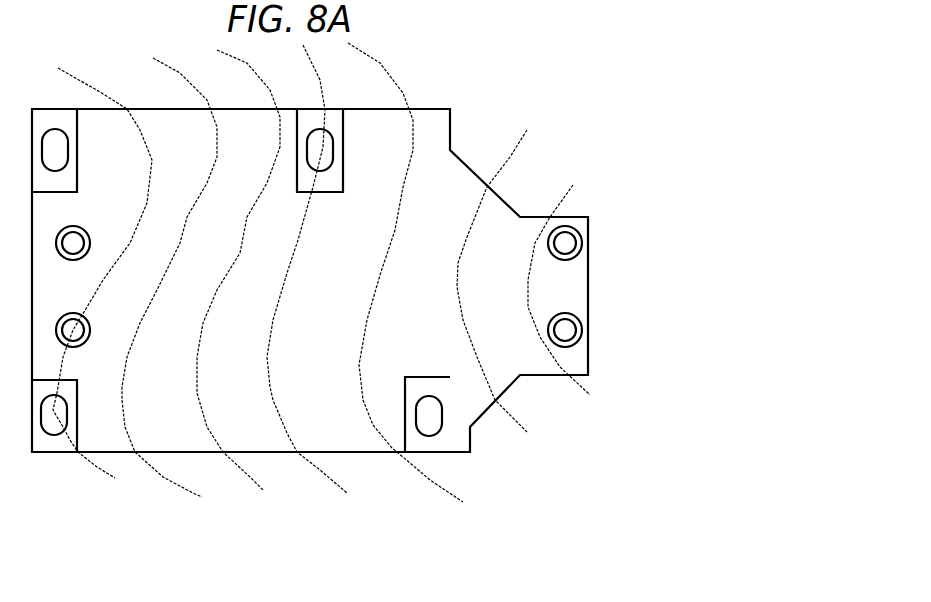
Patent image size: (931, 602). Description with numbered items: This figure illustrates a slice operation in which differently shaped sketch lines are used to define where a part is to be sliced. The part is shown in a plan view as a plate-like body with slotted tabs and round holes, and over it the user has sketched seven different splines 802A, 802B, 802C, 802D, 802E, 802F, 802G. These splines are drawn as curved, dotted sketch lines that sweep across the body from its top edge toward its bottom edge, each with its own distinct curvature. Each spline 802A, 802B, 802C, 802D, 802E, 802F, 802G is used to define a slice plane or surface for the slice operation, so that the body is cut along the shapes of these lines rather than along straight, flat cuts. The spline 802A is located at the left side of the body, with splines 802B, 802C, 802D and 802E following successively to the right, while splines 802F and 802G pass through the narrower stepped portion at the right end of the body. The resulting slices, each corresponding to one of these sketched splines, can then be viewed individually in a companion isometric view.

The sketched spline 802A is at (115, 478).
The sketched spline 802B is at (195, 494).
The sketched spline 802C is at (263, 490).
The sketched spline 802D is at (342, 490).
The sketched spline 802E is at (453, 500).
The sketched spline 802F is at (520, 428).
The sketched spline 802G is at (577, 388).